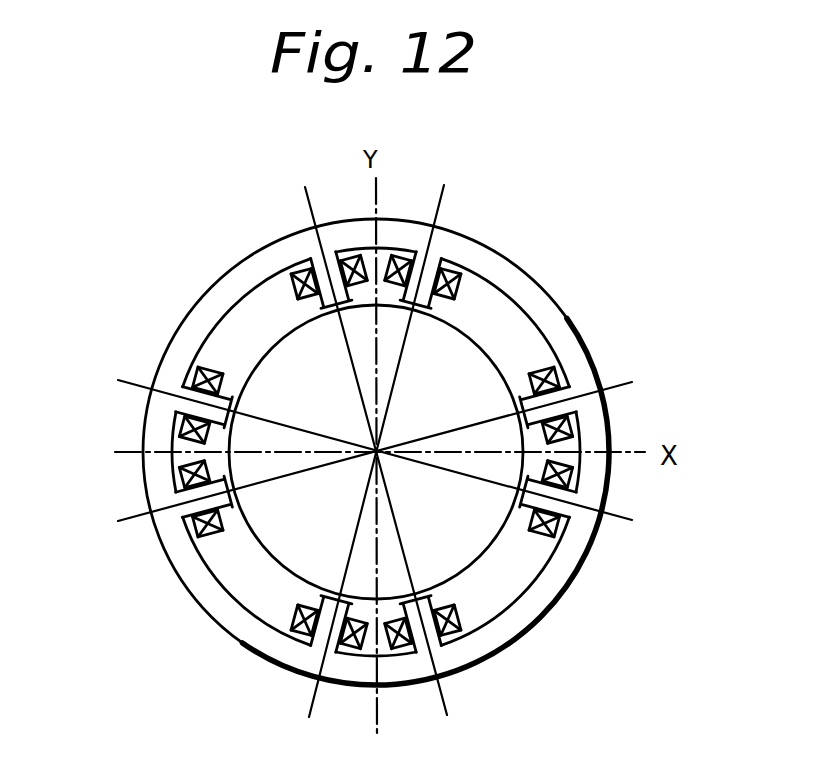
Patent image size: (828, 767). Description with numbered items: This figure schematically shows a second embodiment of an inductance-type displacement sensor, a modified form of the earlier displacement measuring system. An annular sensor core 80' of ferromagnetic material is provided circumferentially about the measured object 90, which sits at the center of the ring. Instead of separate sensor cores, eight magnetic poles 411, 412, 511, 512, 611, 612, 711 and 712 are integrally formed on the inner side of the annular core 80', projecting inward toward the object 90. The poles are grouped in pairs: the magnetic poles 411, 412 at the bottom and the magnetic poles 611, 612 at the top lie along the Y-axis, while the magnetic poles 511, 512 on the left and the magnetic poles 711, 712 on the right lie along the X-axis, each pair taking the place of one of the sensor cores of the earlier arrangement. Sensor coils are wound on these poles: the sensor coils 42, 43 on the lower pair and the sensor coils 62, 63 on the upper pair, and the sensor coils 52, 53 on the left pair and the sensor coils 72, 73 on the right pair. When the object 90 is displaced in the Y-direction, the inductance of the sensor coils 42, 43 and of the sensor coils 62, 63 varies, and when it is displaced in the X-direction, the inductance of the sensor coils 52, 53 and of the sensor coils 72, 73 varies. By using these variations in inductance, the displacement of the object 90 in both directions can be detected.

The magnetic pole 611 is at (334, 260).
The magnetic pole 612 is at (422, 257).
The sensor coil 62 is at (297, 261).
The sensor coil 63 is at (455, 263).
The annular sensor core 80' is at (389, 452).
The magnetic pole 711 is at (560, 393).
The sensor coil 72 is at (575, 423).
The magnetic pole 712 is at (553, 495).
The sensor coil 73 is at (556, 558).
The measured object 90 is at (483, 561).
The sensor coil 42 is at (460, 620).
The magnetic pole 411 is at (438, 640).
The magnetic pole 412 is at (325, 632).
The sensor coil 43 is at (300, 638).
The sensor coil 52 is at (195, 538).
The magnetic pole 511 is at (165, 522).
The magnetic pole 512 is at (175, 392).
The sensor coil 53 is at (195, 378).